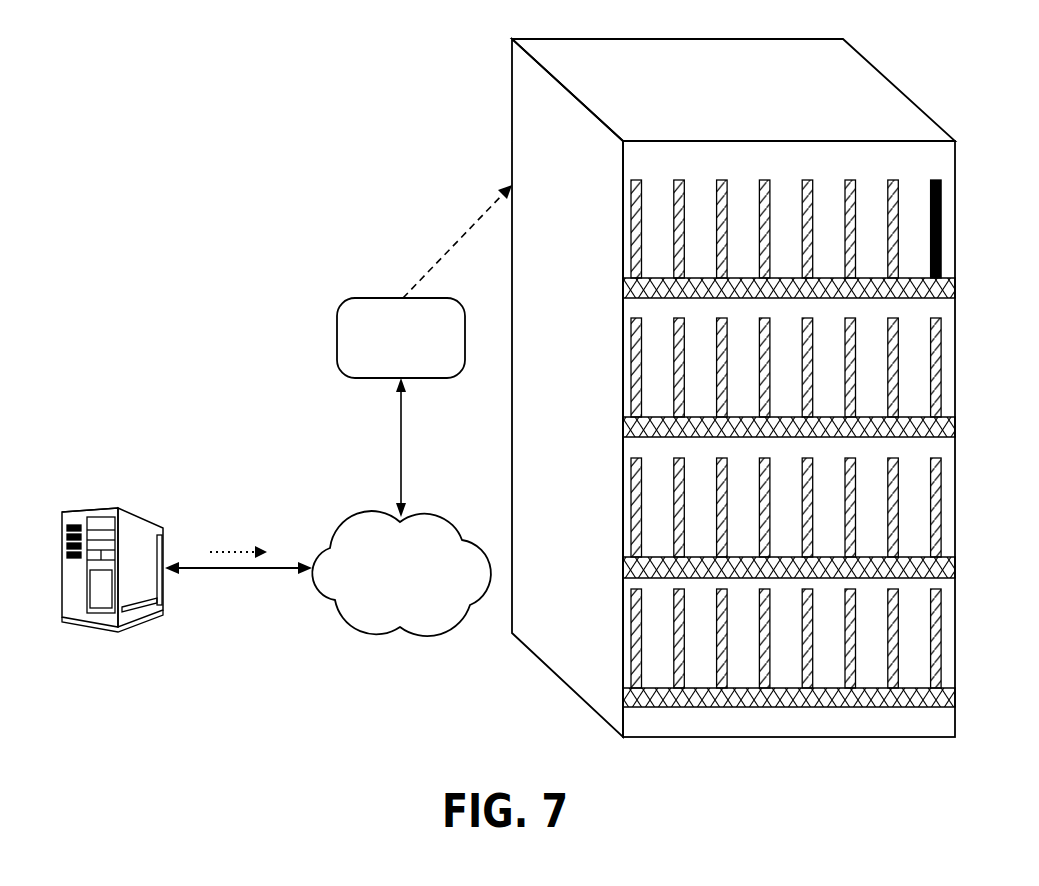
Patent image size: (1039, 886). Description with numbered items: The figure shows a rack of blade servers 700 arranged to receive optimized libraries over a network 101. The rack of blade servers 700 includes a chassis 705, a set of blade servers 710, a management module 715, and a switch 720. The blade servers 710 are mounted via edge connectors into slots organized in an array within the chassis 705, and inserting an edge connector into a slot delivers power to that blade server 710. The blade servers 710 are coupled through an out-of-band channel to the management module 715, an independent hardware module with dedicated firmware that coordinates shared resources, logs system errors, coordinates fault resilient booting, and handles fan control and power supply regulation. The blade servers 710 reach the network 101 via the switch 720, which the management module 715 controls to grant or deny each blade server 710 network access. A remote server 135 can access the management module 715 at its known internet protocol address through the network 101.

The rack of blade servers 700 is at (951, 86).
The chassis 705 is at (518, 96).
The blade servers 710 is at (941, 363).
The management module 715 is at (941, 210).
The switch 720 is at (340, 303).
The network 101 is at (362, 632).
The server 135 is at (150, 522).